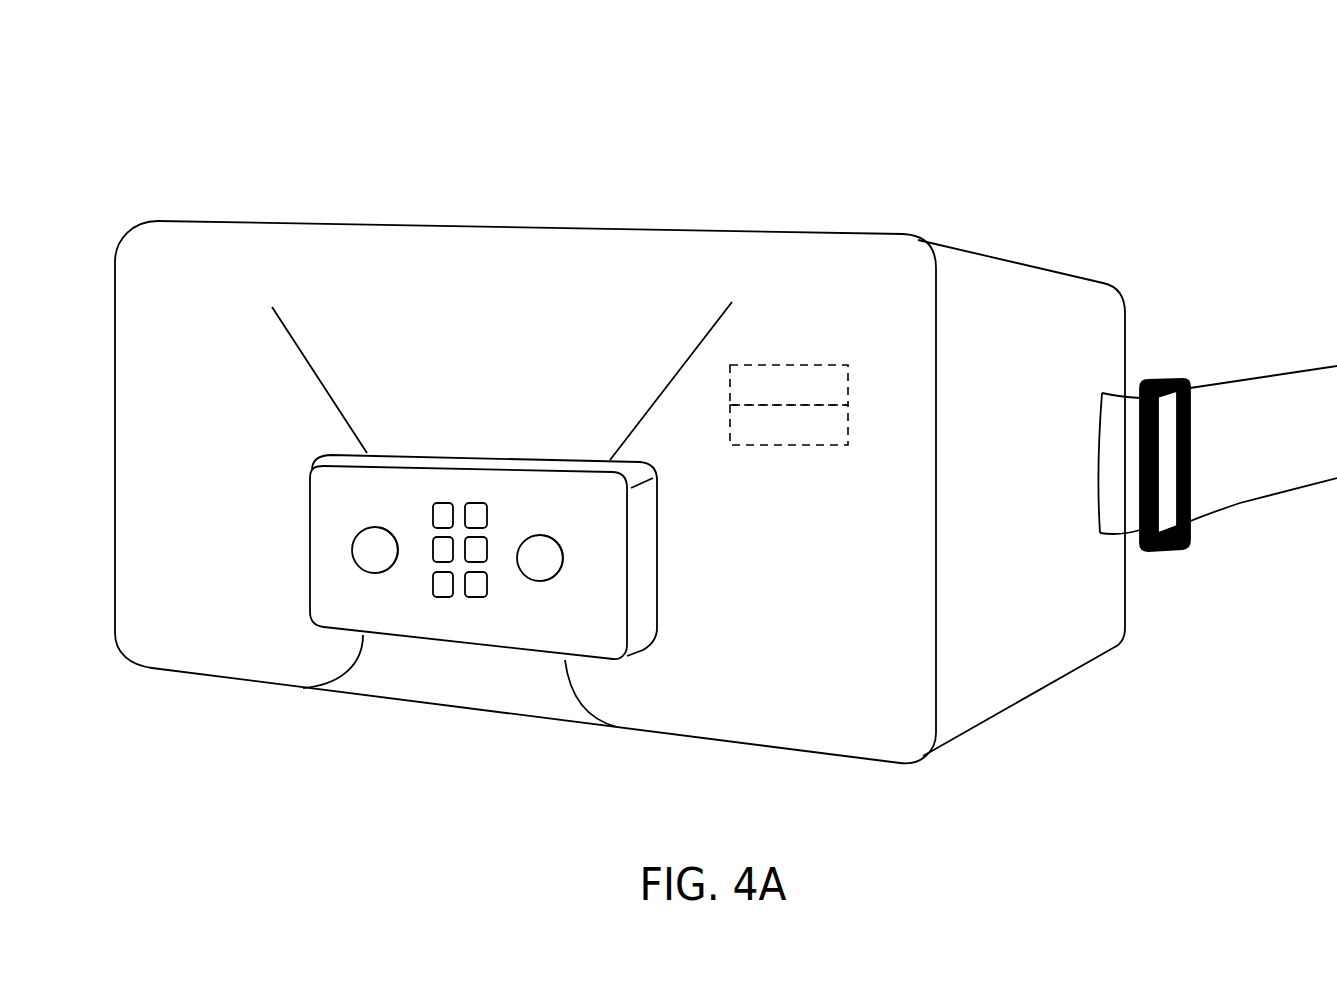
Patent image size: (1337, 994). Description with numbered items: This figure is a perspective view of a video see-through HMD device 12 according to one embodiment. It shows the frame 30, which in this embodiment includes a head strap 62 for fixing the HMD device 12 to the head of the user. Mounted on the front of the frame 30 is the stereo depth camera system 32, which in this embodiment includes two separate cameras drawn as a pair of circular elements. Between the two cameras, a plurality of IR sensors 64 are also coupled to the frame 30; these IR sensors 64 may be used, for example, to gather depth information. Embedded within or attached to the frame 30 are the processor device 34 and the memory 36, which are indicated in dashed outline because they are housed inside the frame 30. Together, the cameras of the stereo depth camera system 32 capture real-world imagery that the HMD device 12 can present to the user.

The video see-through HMD device 12 is at (778, 103).
The frame 30 is at (1003, 260).
The stereo depth camera system 32 is at (358, 548).
The processor device 34 is at (780, 397).
The memory 36 is at (780, 437).
The head strap 62 is at (1253, 378).
The IR sensors 64 is at (432, 540).